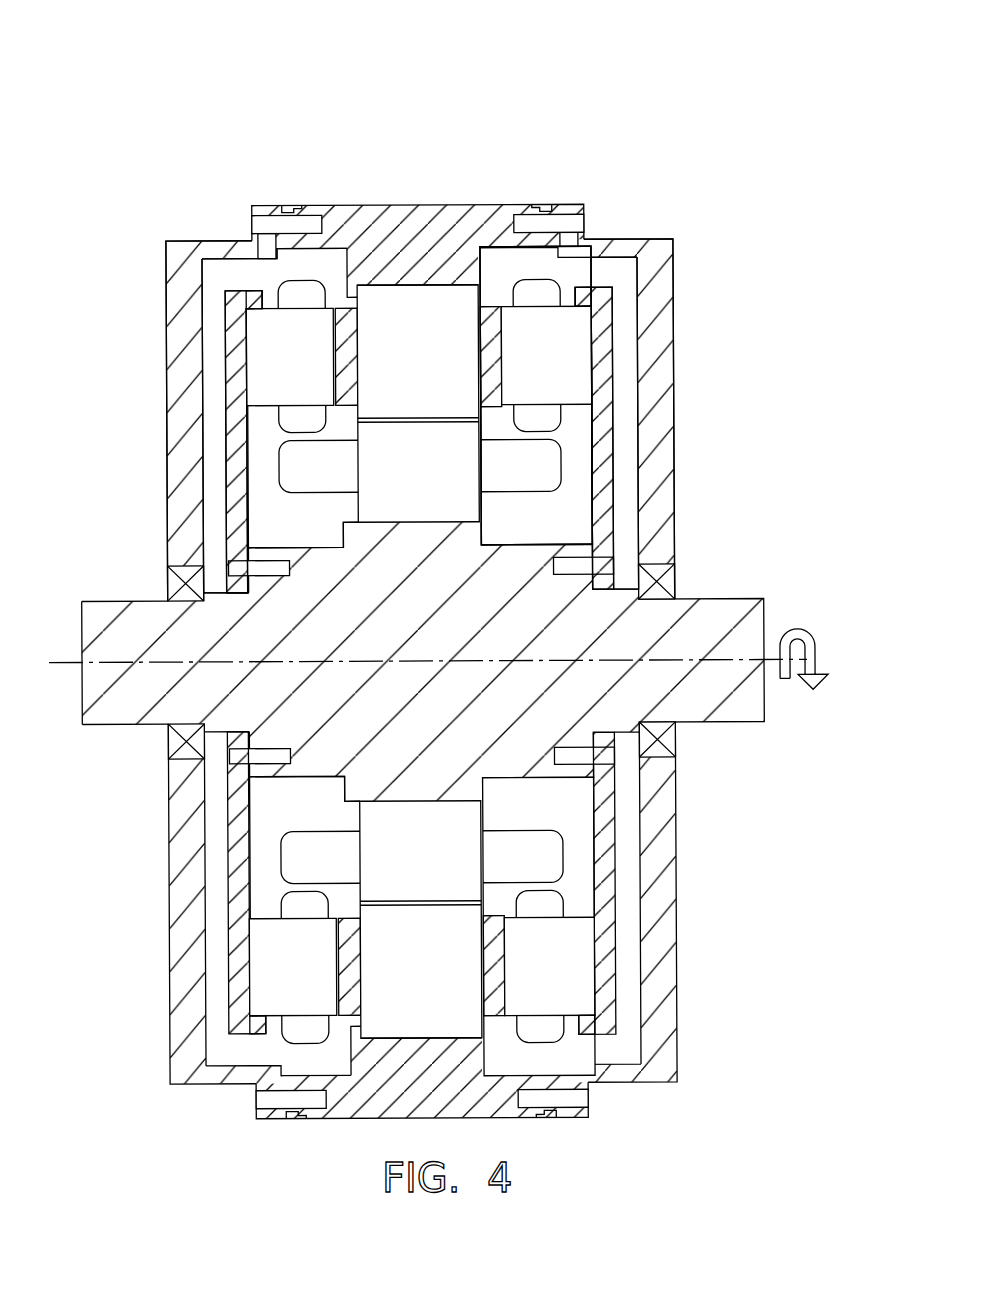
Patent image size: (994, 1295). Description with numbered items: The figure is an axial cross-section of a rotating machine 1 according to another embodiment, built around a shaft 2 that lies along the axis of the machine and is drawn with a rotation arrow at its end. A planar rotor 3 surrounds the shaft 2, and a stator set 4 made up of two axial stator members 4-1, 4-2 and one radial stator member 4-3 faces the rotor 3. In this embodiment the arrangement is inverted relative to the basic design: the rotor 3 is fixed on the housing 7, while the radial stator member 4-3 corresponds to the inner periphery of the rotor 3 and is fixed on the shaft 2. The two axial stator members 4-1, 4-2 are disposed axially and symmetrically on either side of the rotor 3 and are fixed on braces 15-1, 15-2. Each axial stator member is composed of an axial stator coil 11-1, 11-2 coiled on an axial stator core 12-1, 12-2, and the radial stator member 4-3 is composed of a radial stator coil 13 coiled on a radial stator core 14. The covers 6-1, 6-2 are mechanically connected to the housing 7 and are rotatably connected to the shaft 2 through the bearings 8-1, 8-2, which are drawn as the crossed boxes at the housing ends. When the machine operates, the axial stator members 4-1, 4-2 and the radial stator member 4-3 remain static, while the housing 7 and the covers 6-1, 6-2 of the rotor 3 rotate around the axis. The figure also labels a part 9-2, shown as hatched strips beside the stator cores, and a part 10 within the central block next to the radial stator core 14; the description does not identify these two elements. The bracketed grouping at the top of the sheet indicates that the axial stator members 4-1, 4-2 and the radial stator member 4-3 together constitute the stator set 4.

The rotating machine 1 is at (112, 140).
The shaft 2 is at (720, 606).
The rotor 3 is at (500, 286).
The stator set 4 is at (762, 12).
The axial stator member 4-1 is at (234, 341).
The axial stator member 4-2 is at (604, 348).
The radial stator member 4-3 is at (503, 504).
The cover 6-1 is at (176, 288).
The cover 6-2 is at (660, 270).
The housing 7 is at (392, 216).
The bearing 8-1 is at (183, 585).
The bearing 8-2 is at (660, 582).
The yoke 9-2 is at (345, 328).
The hub 10 is at (385, 400).
The axial stator coil 11-1 is at (300, 415).
The axial stator coil 11-2 is at (577, 292).
The axial stator core 12-1 is at (262, 376).
The axial stator core 12-2 is at (570, 378).
The radial stator coil 13 is at (540, 462).
The radial stator core 14 is at (455, 455).
The brace 15-1 is at (260, 300).
The brace 15-2 is at (612, 297).